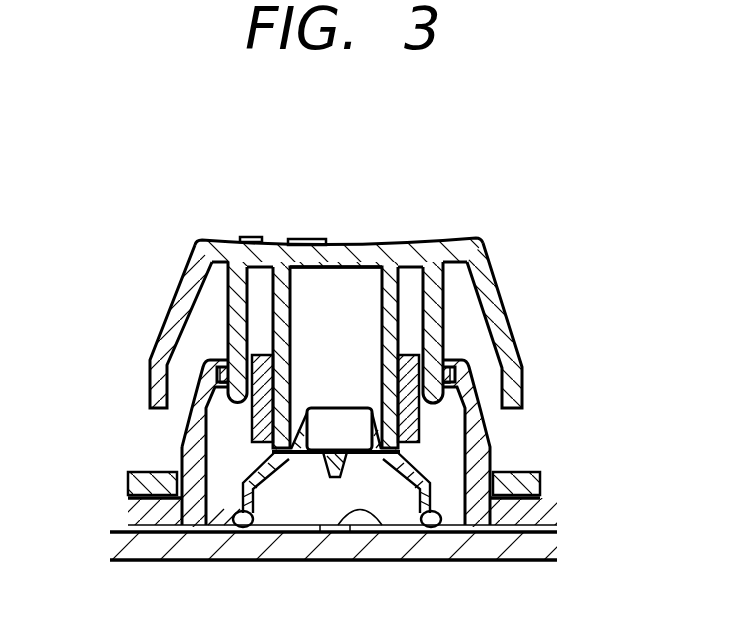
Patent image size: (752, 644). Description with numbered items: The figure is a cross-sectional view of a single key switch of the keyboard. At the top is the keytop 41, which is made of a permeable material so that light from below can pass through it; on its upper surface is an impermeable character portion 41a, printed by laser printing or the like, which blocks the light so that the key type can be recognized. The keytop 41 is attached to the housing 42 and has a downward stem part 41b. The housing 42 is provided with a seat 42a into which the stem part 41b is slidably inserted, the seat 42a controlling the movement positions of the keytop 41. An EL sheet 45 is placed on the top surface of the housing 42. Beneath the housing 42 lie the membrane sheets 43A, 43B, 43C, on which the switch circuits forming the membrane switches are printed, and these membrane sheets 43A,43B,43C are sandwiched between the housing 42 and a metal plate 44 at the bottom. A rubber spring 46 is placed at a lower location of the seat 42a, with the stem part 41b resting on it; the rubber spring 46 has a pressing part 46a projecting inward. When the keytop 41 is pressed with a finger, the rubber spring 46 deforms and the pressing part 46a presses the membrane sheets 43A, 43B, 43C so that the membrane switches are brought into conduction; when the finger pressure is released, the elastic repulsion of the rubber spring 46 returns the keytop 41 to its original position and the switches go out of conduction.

The keytop 41 is at (351, 250).
The character portion 41a is at (300, 239).
The stem part 41b is at (395, 327).
The housing 42 is at (183, 522).
The seat 42a is at (186, 420).
The membrane sheet 43A is at (370, 560).
The membrane sheet 43B is at (370, 560).
The membrane sheet 43C is at (370, 524).
The membrane sheets 43A,43B,43C is at (370, 560).
The metal plate 44 is at (314, 548).
The EL sheet 45 is at (134, 472).
The rubber spring 46 is at (310, 457).
The pressing part 46a is at (428, 487).